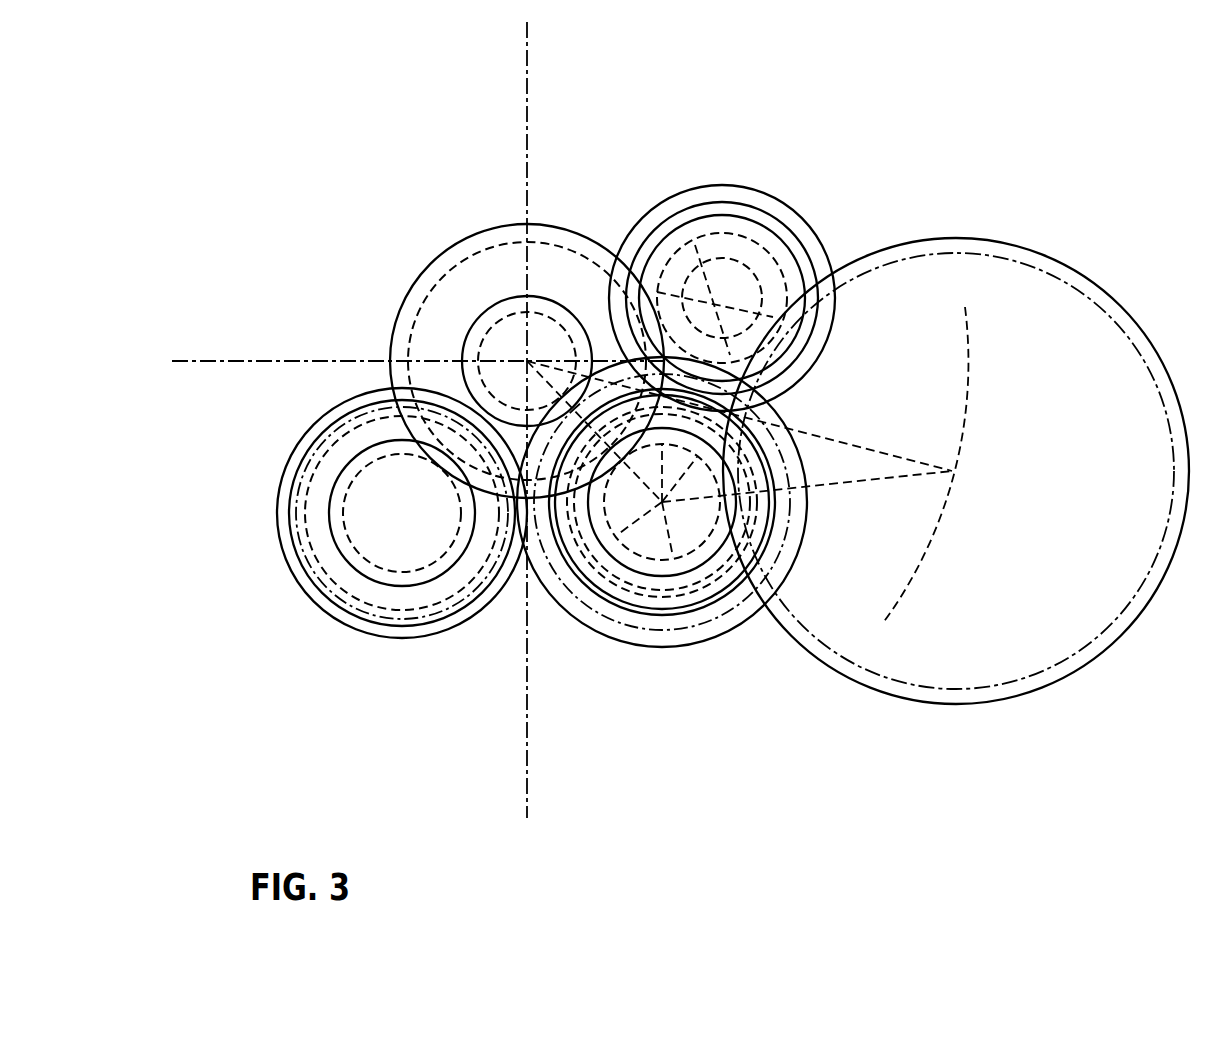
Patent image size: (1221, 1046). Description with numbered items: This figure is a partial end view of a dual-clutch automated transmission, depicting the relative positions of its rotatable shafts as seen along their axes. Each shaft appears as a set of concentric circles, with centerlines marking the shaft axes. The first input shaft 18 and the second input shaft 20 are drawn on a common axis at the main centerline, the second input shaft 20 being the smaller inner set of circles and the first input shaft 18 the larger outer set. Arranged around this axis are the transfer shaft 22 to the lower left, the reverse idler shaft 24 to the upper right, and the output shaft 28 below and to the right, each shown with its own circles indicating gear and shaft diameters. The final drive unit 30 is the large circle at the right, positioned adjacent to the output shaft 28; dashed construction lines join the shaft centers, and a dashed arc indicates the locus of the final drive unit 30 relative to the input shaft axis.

The first input shaft 18 is at (435, 241).
The second input shaft 20 is at (481, 213).
The transfer shaft 22 is at (278, 437).
The reverse idler shaft 24 is at (805, 194).
The output shaft 28 is at (569, 628).
The final drive unit 30 is at (1072, 246).